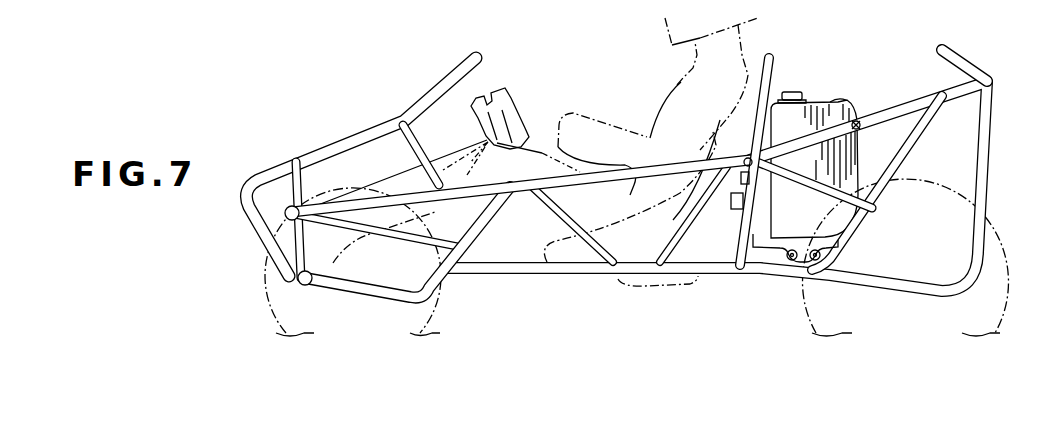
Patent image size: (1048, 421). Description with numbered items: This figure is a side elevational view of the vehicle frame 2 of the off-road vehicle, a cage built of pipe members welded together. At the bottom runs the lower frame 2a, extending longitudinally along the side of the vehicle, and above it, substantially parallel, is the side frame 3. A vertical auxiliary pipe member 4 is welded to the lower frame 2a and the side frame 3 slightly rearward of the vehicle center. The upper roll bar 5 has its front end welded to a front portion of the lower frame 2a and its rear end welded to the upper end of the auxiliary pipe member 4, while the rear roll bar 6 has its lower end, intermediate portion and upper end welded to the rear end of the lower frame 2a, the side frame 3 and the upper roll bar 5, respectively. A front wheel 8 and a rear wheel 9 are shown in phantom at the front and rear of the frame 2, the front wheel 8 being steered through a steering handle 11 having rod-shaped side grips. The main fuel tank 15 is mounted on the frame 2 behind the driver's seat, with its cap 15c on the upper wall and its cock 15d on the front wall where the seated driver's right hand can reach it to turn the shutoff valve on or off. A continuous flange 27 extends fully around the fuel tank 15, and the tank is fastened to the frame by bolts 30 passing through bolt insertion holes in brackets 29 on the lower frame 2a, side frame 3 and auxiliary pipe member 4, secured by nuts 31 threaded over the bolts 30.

The vehicle frame 2 is at (509, 279).
The lower frame 2a is at (586, 278).
The side frame 3 is at (645, 140).
The auxiliary pipe member 4 is at (748, 73).
The upper roll bar 5 is at (437, 89).
The rear roll bar 6 is at (988, 101).
The front wheel 8 is at (267, 301).
The rear wheel 9 is at (1012, 300).
The steering handle 11 is at (518, 117).
The main fuel tank 15 is at (853, 104).
The cap 15c is at (791, 92).
The cock 15d is at (731, 207).
The flange 27 is at (822, 102).
The bracket 29 is at (801, 264).
The bolt 30 is at (747, 162).
The nut 31 is at (789, 260).